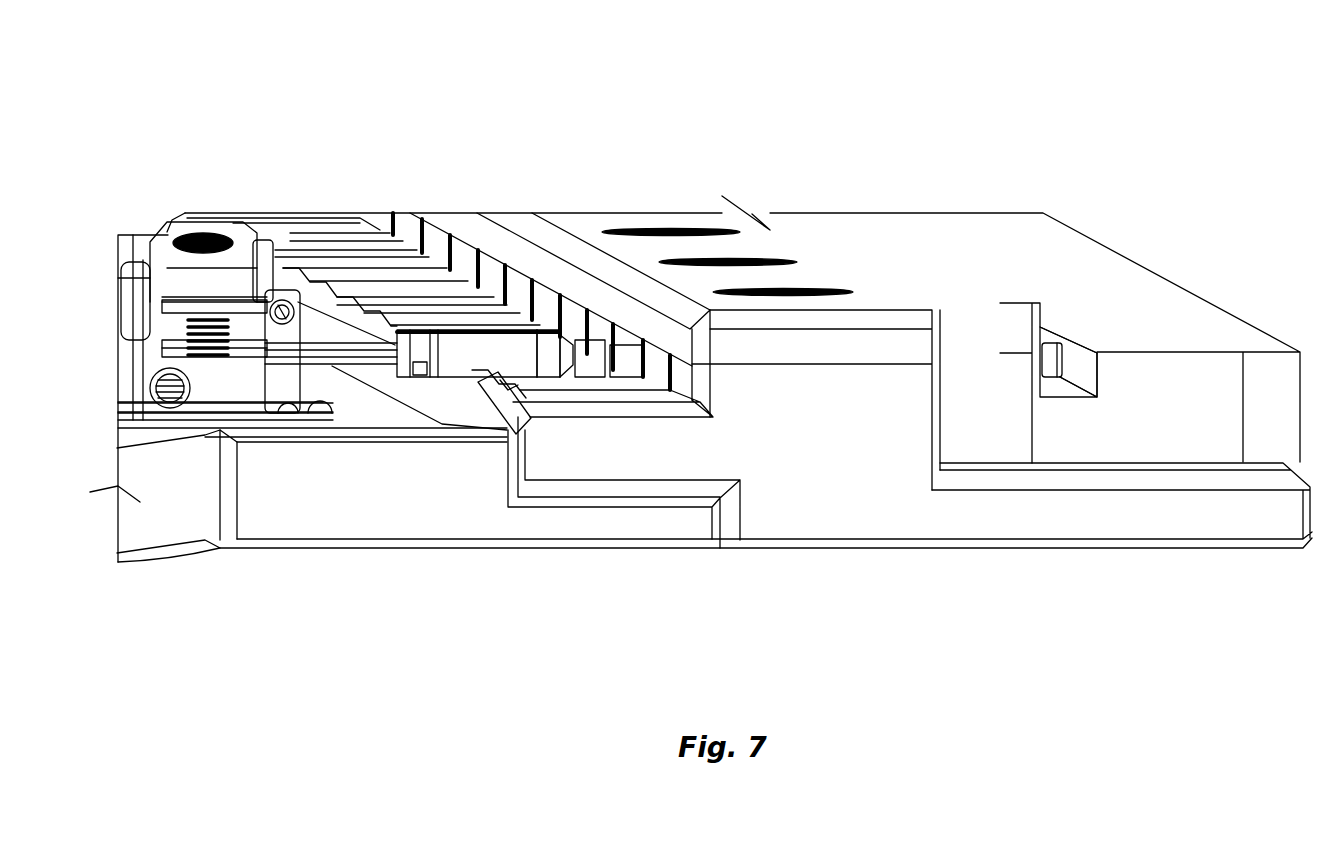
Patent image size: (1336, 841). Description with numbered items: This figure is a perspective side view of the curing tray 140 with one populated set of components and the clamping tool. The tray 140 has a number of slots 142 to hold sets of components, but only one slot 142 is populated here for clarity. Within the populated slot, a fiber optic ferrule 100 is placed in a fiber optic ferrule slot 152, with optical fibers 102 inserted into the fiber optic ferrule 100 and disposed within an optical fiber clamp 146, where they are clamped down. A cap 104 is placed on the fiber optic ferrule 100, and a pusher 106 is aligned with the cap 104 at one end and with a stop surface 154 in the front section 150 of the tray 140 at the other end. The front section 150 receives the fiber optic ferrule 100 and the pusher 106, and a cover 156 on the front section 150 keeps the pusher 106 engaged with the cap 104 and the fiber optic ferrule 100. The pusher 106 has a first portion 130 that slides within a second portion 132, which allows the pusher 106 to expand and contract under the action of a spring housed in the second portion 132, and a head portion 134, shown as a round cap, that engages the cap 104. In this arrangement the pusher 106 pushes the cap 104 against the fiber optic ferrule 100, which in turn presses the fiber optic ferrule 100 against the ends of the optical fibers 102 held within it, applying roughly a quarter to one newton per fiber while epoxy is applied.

The fiber optic ferrule 100 is at (460, 370).
The optical fibers 102 is at (358, 365).
The cap 104 is at (548, 352).
The pusher 106 is at (1045, 330).
The first portion 130 is at (625, 372).
The second portion 132 is at (1047, 367).
The head portion 134 is at (590, 372).
The curing tray 140 is at (955, 135).
The slots 142 is at (253, 165).
The optical fiber clamp 146 is at (175, 258).
The front section 150 is at (826, 160).
The fiber optic ferrule slot 152 is at (505, 392).
The stop surface 154 is at (1073, 360).
The cover 156 is at (836, 355).